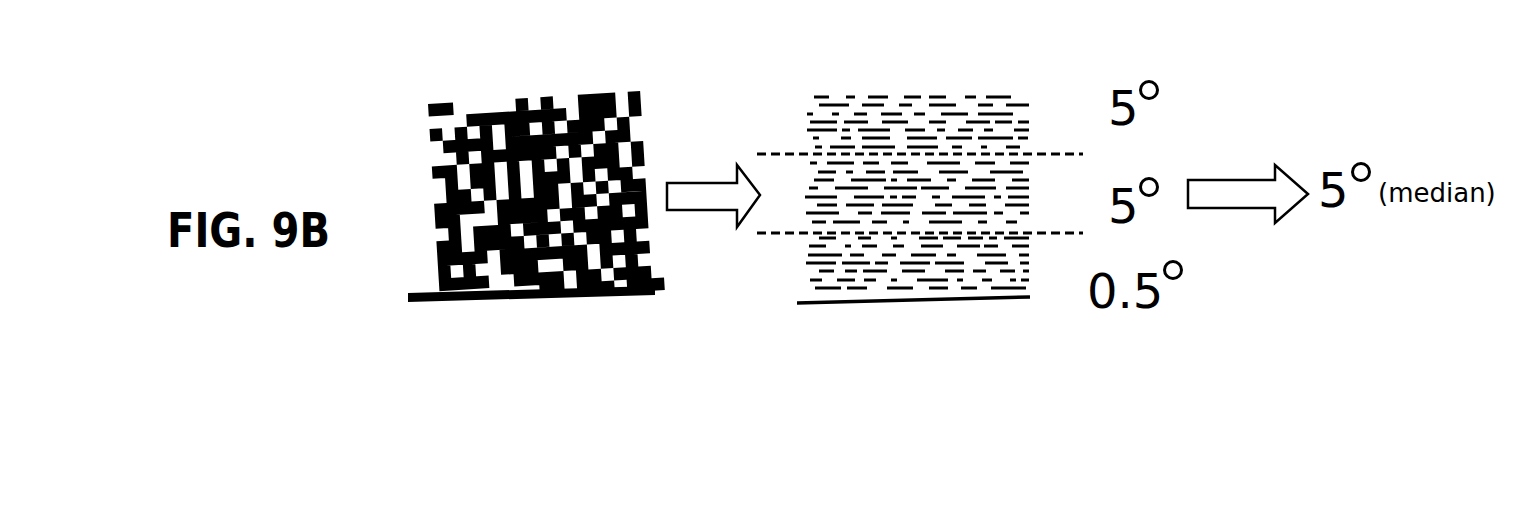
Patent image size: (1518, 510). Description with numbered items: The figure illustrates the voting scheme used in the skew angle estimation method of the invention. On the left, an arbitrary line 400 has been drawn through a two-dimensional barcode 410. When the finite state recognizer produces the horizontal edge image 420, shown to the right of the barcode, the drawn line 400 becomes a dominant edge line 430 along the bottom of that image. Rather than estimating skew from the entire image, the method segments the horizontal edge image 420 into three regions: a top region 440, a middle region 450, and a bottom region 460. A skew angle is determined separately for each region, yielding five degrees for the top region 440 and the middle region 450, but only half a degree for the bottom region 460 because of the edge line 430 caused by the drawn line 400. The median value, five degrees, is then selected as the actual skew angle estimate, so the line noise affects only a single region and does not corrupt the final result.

The drawn line 400 is at (442, 298).
The barcode 410 is at (418, 148).
The horizontal edge image 420 is at (999, 188).
The edge line 430 is at (838, 303).
The top region 440 is at (1008, 117).
The middle region 450 is at (1030, 187).
The bottom region 460 is at (1040, 277).